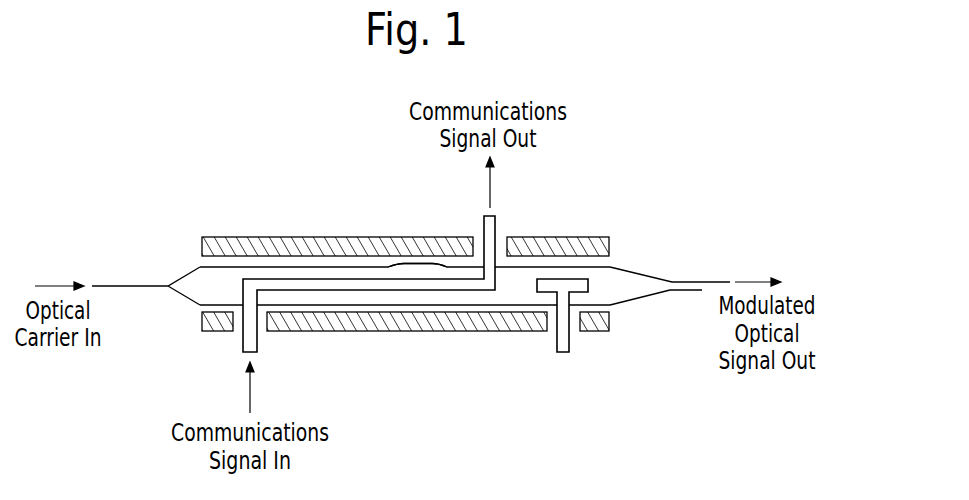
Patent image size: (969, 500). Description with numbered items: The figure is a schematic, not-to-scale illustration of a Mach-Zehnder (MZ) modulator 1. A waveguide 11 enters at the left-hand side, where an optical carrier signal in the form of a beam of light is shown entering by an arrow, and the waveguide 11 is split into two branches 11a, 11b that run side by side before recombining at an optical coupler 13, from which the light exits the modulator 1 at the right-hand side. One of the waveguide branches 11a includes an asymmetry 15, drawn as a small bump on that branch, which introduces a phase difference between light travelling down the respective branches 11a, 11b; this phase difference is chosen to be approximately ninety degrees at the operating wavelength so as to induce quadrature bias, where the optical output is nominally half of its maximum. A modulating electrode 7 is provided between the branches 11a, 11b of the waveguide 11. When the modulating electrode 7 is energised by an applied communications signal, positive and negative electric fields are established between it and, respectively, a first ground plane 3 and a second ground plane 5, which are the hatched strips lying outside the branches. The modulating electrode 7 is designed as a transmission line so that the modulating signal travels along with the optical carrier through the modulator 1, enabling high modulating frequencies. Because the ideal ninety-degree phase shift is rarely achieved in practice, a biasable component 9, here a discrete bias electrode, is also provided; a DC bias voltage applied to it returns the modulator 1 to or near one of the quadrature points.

The MZ modulator 1 is at (198, 179).
The first ground plane 3 is at (346, 245).
The second ground plane 5 is at (395, 318).
The modulating electrode 7 is at (318, 285).
The biasable component 9 is at (563, 352).
The waveguide 11 is at (123, 284).
The first waveguide branch 11a is at (270, 267).
The second waveguide branch 11b is at (473, 306).
The optical coupler 13 is at (692, 282).
The asymmetry 15 is at (417, 262).